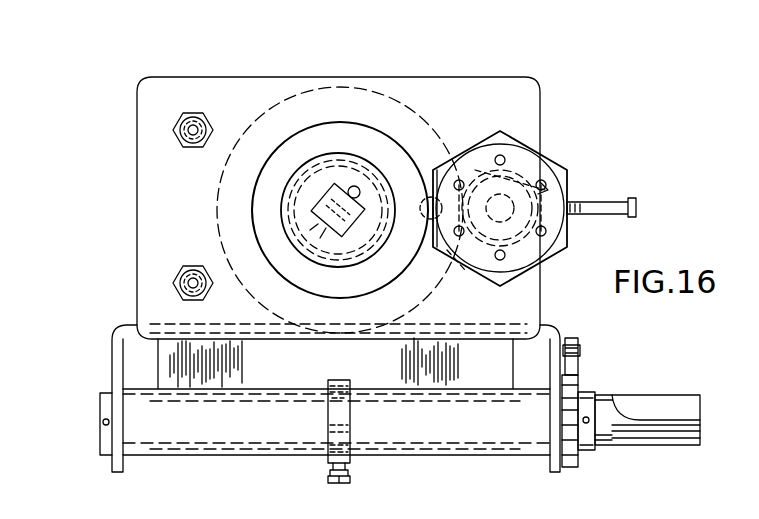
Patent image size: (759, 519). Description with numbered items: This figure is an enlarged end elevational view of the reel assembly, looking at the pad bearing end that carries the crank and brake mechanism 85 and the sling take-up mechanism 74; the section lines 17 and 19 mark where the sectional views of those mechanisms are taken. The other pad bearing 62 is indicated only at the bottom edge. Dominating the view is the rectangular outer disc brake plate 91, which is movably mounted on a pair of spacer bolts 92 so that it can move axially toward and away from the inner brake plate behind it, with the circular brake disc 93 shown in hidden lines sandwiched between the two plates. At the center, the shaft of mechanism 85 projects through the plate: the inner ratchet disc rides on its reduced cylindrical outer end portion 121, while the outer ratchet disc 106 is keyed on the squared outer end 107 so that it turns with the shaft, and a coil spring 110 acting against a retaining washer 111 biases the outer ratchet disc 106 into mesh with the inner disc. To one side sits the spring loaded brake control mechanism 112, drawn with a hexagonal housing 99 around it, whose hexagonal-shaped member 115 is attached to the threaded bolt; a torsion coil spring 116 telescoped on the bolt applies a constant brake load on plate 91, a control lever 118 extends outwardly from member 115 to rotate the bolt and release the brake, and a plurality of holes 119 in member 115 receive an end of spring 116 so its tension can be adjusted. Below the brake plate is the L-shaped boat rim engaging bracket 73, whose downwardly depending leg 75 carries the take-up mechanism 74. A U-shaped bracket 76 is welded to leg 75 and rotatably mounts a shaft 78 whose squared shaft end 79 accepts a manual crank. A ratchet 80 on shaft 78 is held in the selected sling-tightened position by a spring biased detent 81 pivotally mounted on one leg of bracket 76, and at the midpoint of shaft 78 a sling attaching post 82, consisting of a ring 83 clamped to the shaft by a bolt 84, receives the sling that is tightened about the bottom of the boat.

The section line 17- 17 is at (62, 97).
The section line 19- 19 is at (314, 57).
The pad bearing 62 is at (250, 518).
The L-shaped boat rim engaging bracket 73 is at (287, 372).
The sling take-up mechanism 74 is at (575, 481).
The downwardly depending leg 75 is at (182, 362).
The U-shaped bracket 76 is at (112, 340).
The shaft 78 is at (168, 423).
The squared shaft end 79 is at (680, 412).
The ratchet 80 is at (570, 386).
The spring biased detent 81 is at (572, 365).
The sling attaching post 82 is at (352, 429).
The ring 83 is at (340, 405).
The bolt 84 is at (328, 466).
The crank and brake mechanism 85 is at (414, 138).
The outer disc brake plate 91 is at (160, 186).
The spacer bolts 92 is at (175, 130).
The brake disc 93 is at (215, 222).
The hexagonal housing 99 is at (437, 150).
The outer ratchet disc 106 is at (298, 135).
The squared outer end 107 is at (330, 190).
The coil spring 110 is at (326, 264).
The retaining washer 111 is at (310, 232).
The spring loaded brake control mechanism 112 is at (549, 155).
The hexagonal-shaped member 115 is at (549, 182).
The torsion coil spring 116 is at (472, 245).
The control lever 118 is at (617, 203).
The holes 119 is at (501, 155).
The reduced cylindrical outer end portion 121 is at (300, 205).